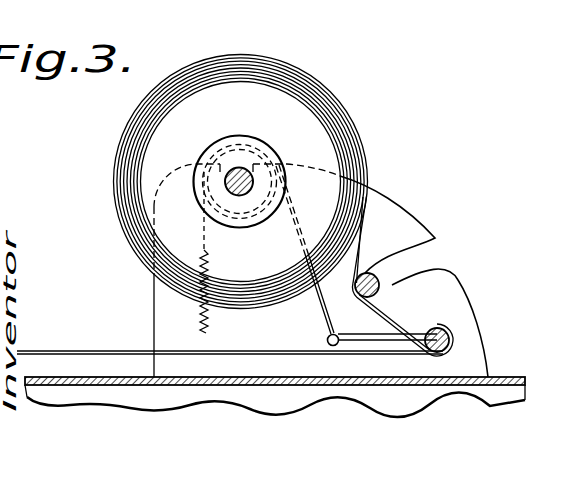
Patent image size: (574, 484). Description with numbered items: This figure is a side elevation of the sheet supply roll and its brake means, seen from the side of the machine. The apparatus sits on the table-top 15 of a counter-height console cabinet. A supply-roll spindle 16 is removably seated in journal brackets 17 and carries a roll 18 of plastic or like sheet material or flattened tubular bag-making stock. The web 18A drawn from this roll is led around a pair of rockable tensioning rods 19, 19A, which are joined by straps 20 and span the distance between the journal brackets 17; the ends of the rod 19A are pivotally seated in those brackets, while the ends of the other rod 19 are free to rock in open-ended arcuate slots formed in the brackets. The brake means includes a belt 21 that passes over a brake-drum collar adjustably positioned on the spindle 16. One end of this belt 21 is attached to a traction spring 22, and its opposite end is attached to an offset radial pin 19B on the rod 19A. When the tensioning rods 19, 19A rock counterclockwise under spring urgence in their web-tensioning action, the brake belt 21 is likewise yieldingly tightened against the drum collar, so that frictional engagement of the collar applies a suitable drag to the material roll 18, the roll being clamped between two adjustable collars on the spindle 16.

The table-top 15 is at (500, 377).
The supply-roll spindle 16 is at (245, 195).
The journal brackets 17 is at (464, 313).
The roll 18 is at (325, 123).
The web 18A is at (30, 350).
The tensioning rod 19 is at (426, 224).
The tensioning rod 19A is at (452, 347).
The offset radial pin 19B is at (357, 356).
The straps 20 is at (374, 272).
The belt 21 is at (305, 297).
The traction spring 22 is at (198, 306).